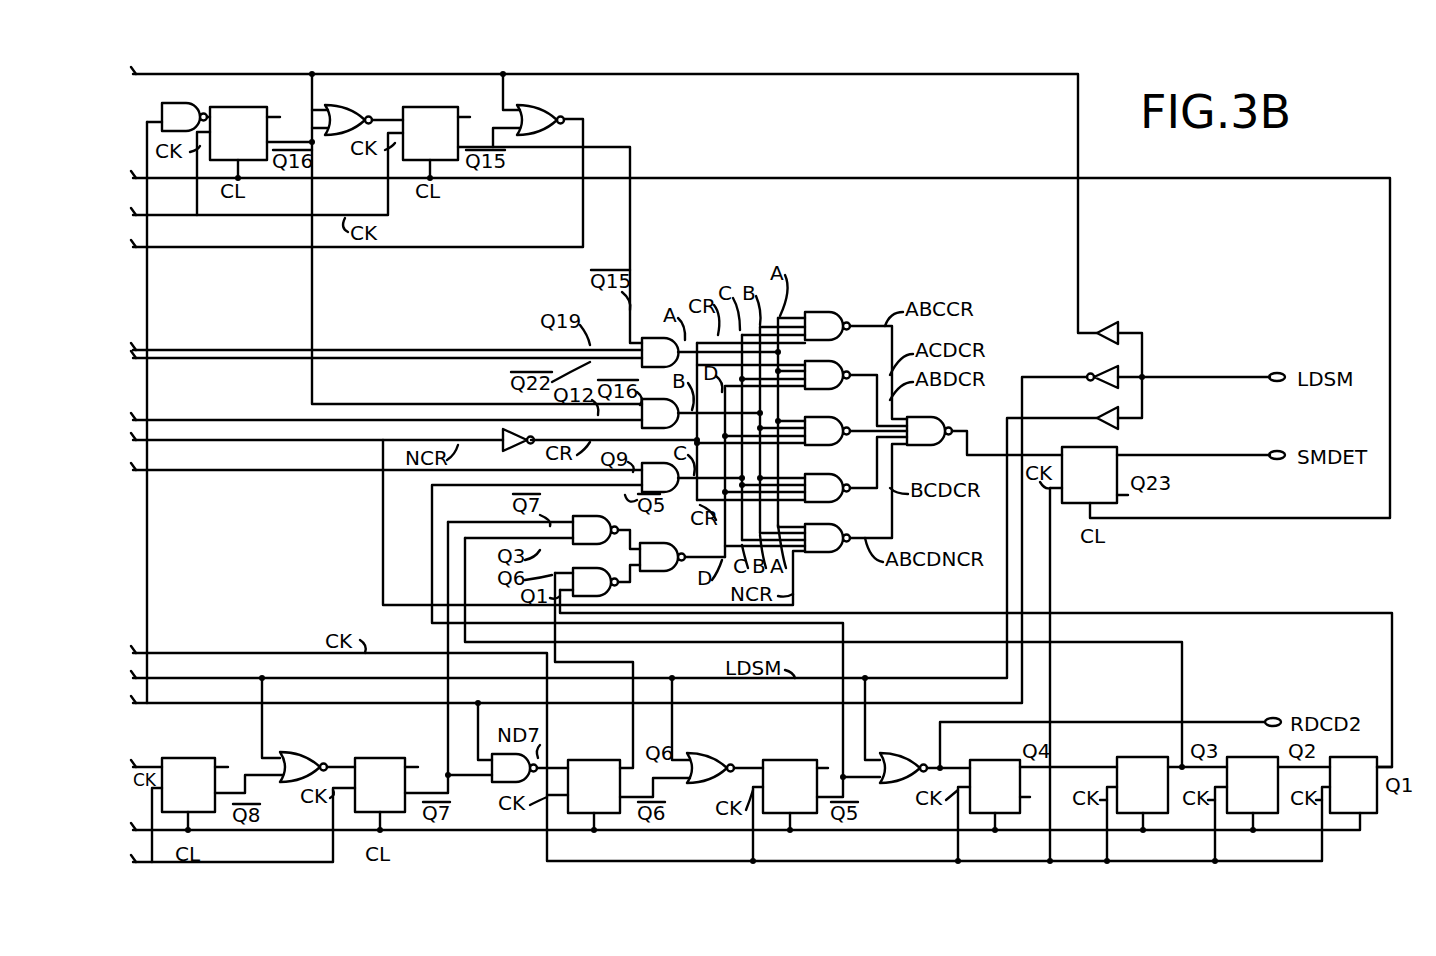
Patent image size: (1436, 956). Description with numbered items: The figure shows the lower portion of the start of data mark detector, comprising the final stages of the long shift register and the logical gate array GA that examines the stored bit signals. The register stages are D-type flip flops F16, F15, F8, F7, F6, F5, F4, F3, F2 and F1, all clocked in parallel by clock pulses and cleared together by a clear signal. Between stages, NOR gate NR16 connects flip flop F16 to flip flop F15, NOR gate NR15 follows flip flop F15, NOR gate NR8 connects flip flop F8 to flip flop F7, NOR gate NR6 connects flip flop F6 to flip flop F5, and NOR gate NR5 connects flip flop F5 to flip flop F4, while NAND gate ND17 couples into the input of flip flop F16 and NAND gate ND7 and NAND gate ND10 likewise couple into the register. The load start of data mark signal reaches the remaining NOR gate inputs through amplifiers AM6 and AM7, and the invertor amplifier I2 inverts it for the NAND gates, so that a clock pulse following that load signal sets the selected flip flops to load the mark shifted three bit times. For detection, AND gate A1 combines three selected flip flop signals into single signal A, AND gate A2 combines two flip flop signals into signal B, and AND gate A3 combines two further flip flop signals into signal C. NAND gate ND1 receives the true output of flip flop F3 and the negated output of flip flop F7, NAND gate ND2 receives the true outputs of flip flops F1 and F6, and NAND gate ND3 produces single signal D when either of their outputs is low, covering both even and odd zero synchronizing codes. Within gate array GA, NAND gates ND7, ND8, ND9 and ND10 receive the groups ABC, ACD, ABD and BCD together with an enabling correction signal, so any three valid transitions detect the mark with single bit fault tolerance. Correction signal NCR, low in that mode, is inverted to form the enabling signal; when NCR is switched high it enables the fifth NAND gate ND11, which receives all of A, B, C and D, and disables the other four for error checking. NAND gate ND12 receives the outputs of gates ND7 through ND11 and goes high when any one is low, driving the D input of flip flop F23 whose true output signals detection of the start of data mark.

The NAND gate ND17 is at (170, 112).
The flip flop F16 is at (261, 142).
The NOR gate NR16 is at (350, 112).
The flip flop F15 is at (436, 142).
The NOR gate NR15 is at (540, 112).
The AND gate A1 is at (711, 352).
The AND gate A2 is at (702, 413).
The AND gate A3 is at (693, 477).
The NAND gate ND1 is at (597, 526).
The NAND gate ND2 is at (590, 580).
The NAND gate ND3 is at (662, 560).
The logical gate array GA is at (878, 446).
The NAND gate ND7 is at (823, 322).
The NAND gate ND8 is at (833, 374).
The NAND gate ND9 is at (825, 429).
The NAND gate ND10 is at (823, 482).
The NAND gate ND11 is at (823, 536).
The NAND gate ND12 is at (928, 424).
The amplifier AM6 is at (1108, 320).
The invertor amplifier I2 is at (1105, 370).
The amplifier AM7 is at (1115, 425).
The flip flop F23 is at (1166, 475).
The NOR gate NR8 is at (303, 758).
The flip flop F8 is at (222, 794).
The flip flop F7 is at (386, 794).
The flip flop F6 is at (629, 795).
The NOR gate NR6 is at (705, 758).
The flip flop F5 is at (790, 810).
The NOR gate NR5 is at (886, 758).
The flip flop F4 is at (1037, 810).
The flip flop F3 is at (1167, 809).
The flip flop F2 is at (1272, 809).
The flip flop F1 is at (1361, 785).
The correction signal NCR is at (518, 440).